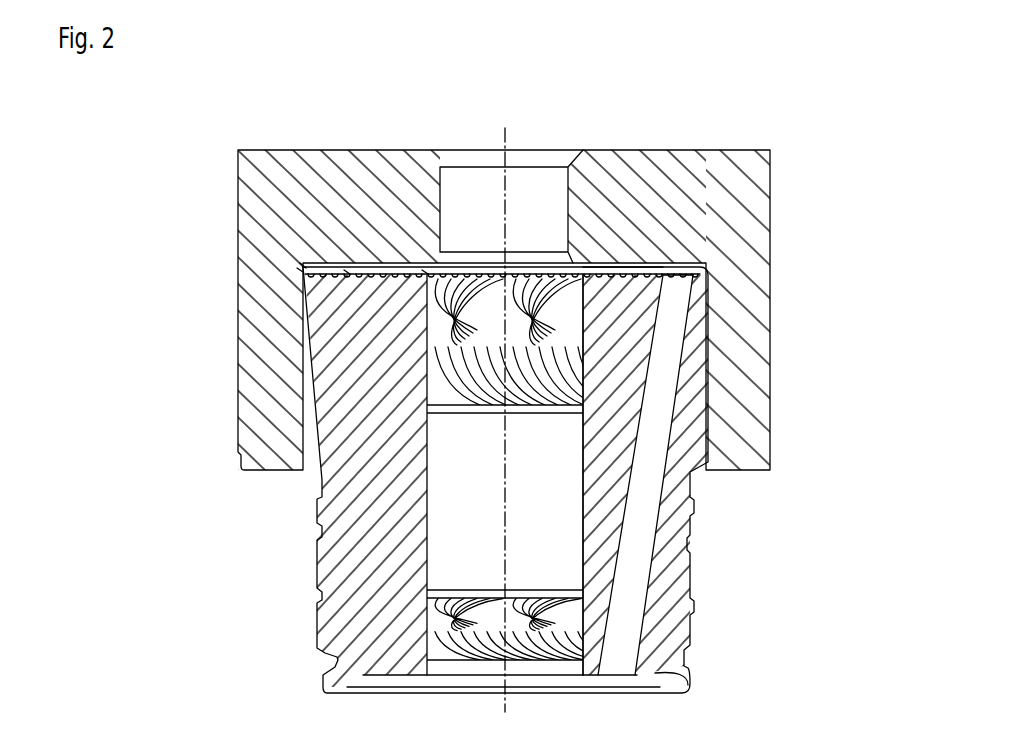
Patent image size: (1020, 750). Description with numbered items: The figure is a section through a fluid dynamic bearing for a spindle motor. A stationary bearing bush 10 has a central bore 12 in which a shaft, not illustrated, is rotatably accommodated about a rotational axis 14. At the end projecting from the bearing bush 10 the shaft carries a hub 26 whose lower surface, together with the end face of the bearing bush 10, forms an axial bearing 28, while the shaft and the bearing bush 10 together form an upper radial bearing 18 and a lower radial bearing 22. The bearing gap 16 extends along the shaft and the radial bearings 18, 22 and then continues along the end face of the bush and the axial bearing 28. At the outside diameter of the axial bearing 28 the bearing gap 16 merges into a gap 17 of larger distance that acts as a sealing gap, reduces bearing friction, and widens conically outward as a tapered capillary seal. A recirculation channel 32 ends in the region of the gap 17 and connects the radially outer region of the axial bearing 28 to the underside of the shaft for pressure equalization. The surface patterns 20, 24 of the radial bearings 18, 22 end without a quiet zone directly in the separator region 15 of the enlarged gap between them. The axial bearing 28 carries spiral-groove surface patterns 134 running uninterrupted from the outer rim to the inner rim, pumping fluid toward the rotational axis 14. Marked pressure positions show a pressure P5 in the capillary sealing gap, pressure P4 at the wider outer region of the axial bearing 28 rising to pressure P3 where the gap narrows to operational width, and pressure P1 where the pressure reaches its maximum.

The bearing bush 10 is at (360, 568).
The bore 12 is at (455, 497).
The rotational axis 14 is at (505, 135).
The separator region 15 is at (583, 445).
The bearing gap 16 is at (388, 267).
The gap 17 is at (680, 265).
The upper radial bearing 18 is at (565, 340).
The surface patterns of the upper radial bearing 20 is at (583, 378).
The lower radial bearing 22 is at (600, 660).
The surface patterns of the lower radial bearing 24 is at (600, 632).
The hub 26 is at (707, 180).
The axial bearing 28 is at (633, 265).
The recirculation channel 32 is at (638, 507).
The surface patterns 134 is at (593, 265).
The pressure P1 is at (425, 267).
The pressure P3 is at (347, 267).
The pressure P4 is at (300, 265).
The pressure P5 is at (303, 268).